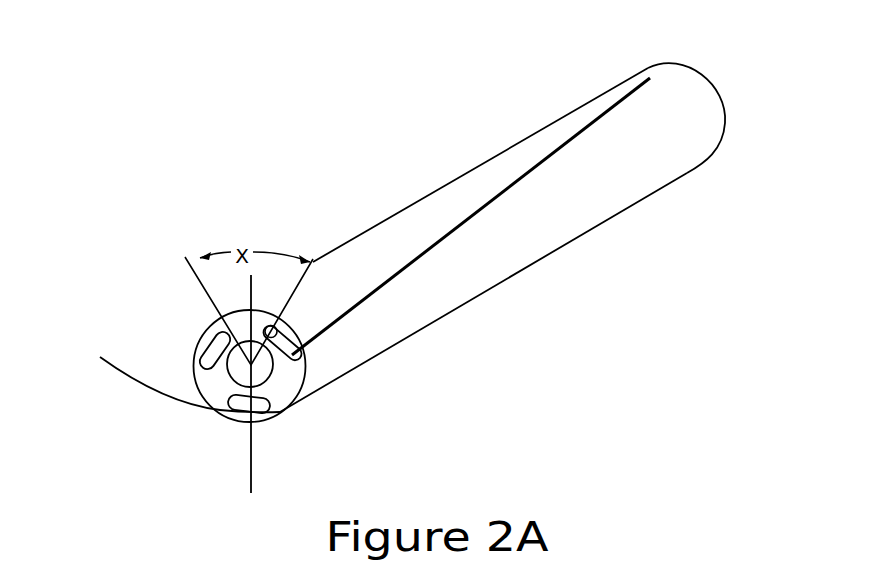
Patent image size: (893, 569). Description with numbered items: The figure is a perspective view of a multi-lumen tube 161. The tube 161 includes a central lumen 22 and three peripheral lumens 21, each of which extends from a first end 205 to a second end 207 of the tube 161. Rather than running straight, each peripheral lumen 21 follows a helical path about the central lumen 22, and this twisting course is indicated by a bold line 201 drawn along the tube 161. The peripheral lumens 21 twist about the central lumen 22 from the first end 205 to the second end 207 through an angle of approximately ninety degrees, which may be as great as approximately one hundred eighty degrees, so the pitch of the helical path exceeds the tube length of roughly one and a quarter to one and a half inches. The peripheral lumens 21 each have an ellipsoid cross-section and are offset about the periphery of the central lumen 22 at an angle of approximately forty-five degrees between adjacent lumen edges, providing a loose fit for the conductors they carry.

The multi-lumen tube 161 is at (346, 173).
The bold line 201 is at (450, 228).
The second end 207 is at (685, 67).
The peripheral lumens 21 is at (210, 345).
The central lumen 22 is at (266, 377).
The first end 205 is at (258, 423).